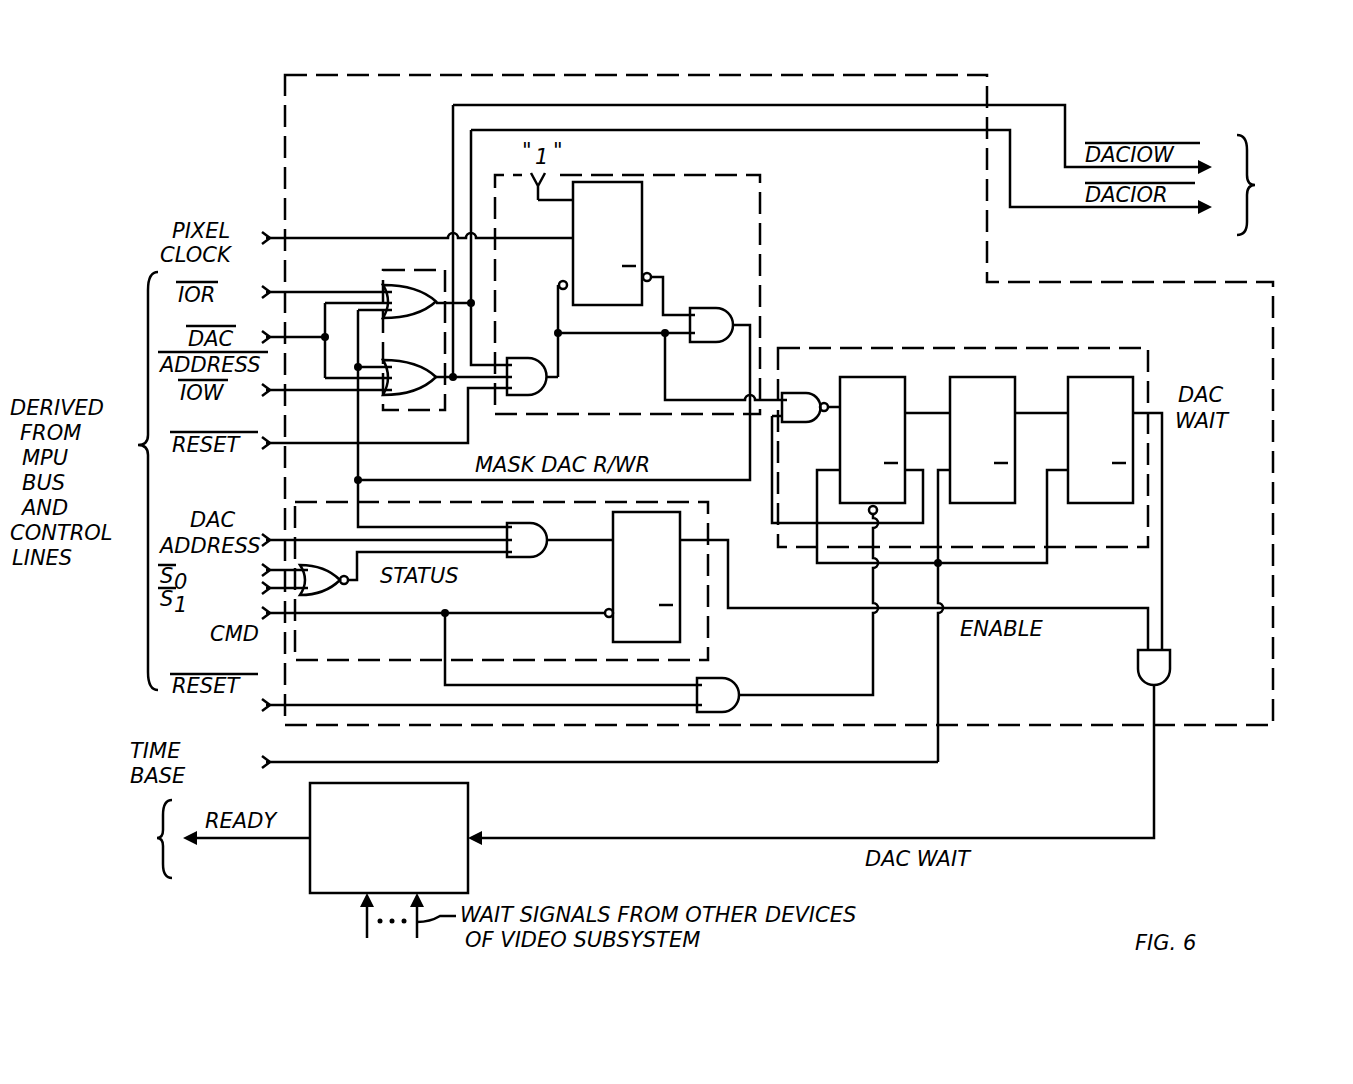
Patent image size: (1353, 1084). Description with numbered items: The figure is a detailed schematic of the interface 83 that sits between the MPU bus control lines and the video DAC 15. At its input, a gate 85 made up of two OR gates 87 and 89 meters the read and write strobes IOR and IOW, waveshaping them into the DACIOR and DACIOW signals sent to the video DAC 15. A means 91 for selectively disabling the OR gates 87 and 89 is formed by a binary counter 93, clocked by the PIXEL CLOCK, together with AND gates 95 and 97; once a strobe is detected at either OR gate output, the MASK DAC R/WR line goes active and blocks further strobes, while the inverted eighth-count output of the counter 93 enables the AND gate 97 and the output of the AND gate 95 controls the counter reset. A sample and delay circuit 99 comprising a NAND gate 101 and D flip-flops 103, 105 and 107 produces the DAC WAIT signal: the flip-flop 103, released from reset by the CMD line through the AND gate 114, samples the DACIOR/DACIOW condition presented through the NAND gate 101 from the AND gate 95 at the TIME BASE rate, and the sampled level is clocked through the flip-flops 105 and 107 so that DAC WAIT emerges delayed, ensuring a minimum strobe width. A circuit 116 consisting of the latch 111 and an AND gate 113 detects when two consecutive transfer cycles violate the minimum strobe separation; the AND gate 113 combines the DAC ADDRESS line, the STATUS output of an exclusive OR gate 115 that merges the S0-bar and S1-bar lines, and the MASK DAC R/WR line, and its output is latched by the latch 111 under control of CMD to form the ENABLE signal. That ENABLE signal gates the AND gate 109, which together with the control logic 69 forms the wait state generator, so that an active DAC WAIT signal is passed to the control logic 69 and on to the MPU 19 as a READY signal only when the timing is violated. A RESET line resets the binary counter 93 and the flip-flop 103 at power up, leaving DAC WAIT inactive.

The interface 83 is at (779, 400).
The gate 85 is at (445, 270).
The OR gate 87 is at (388, 288).
The OR gate 89 is at (414, 395).
The means for selectively disabling the OR gates 91 is at (760, 192).
The binary counter 93 is at (642, 222).
The AND gate 95 is at (546, 393).
The AND gate 97 is at (716, 342).
The sample and delay circuit 99 is at (890, 348).
The NAND gate 101 is at (808, 422).
The D flip-flop 103 is at (840, 377).
The D flip-flop 105 is at (952, 377).
The D flip-flop 107 is at (1068, 377).
The AND gate 109 is at (1136, 665).
The latch 111 is at (613, 526).
The AND gate 113 is at (537, 557).
The AND gate 114 is at (740, 680).
The exclusive OR gate 115 is at (350, 592).
The circuit 116 is at (708, 502).
The control logic 69 is at (468, 797).
The video DAC 15 is at (1295, 200).
The MPU 19 is at (127, 846).